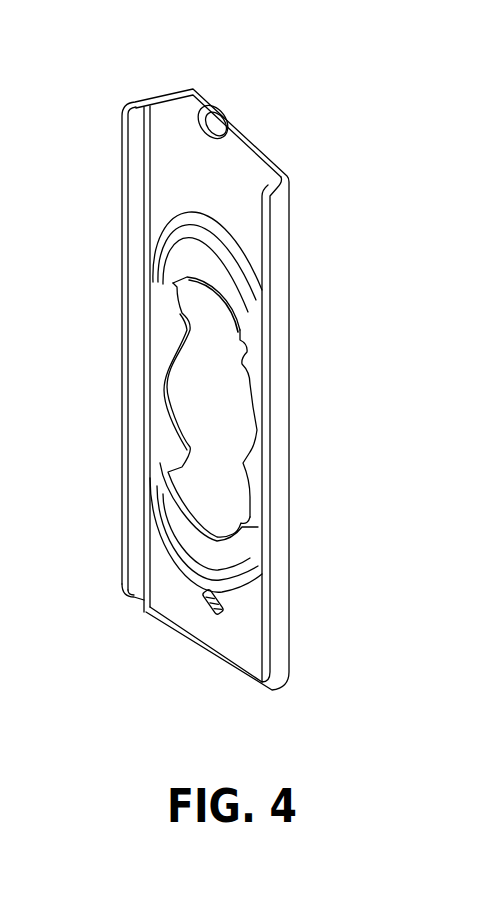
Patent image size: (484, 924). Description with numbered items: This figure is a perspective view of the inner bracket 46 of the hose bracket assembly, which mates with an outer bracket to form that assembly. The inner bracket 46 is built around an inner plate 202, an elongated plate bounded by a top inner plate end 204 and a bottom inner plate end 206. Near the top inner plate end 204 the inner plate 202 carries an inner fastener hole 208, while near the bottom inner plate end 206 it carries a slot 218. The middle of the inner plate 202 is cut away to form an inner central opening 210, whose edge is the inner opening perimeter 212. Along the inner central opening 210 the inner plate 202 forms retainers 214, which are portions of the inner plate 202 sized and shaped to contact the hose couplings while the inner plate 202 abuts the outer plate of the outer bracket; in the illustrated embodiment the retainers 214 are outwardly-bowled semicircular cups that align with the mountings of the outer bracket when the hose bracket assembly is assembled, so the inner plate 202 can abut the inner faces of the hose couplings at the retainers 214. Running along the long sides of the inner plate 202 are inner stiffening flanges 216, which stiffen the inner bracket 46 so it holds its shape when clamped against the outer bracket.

The inner bracket 46 is at (300, 113).
The inner plate 202 is at (262, 181).
The top inner plate end 204 is at (168, 115).
The bottom inner plate end 206 is at (162, 610).
The inner fastener hole 208 is at (215, 119).
The inner central opening 210 is at (230, 395).
The inner opening perimeter 212 is at (248, 442).
The retainers 214 is at (215, 275).
The inner stiffening flanges 216 is at (137, 152).
The slot 218 is at (207, 612).